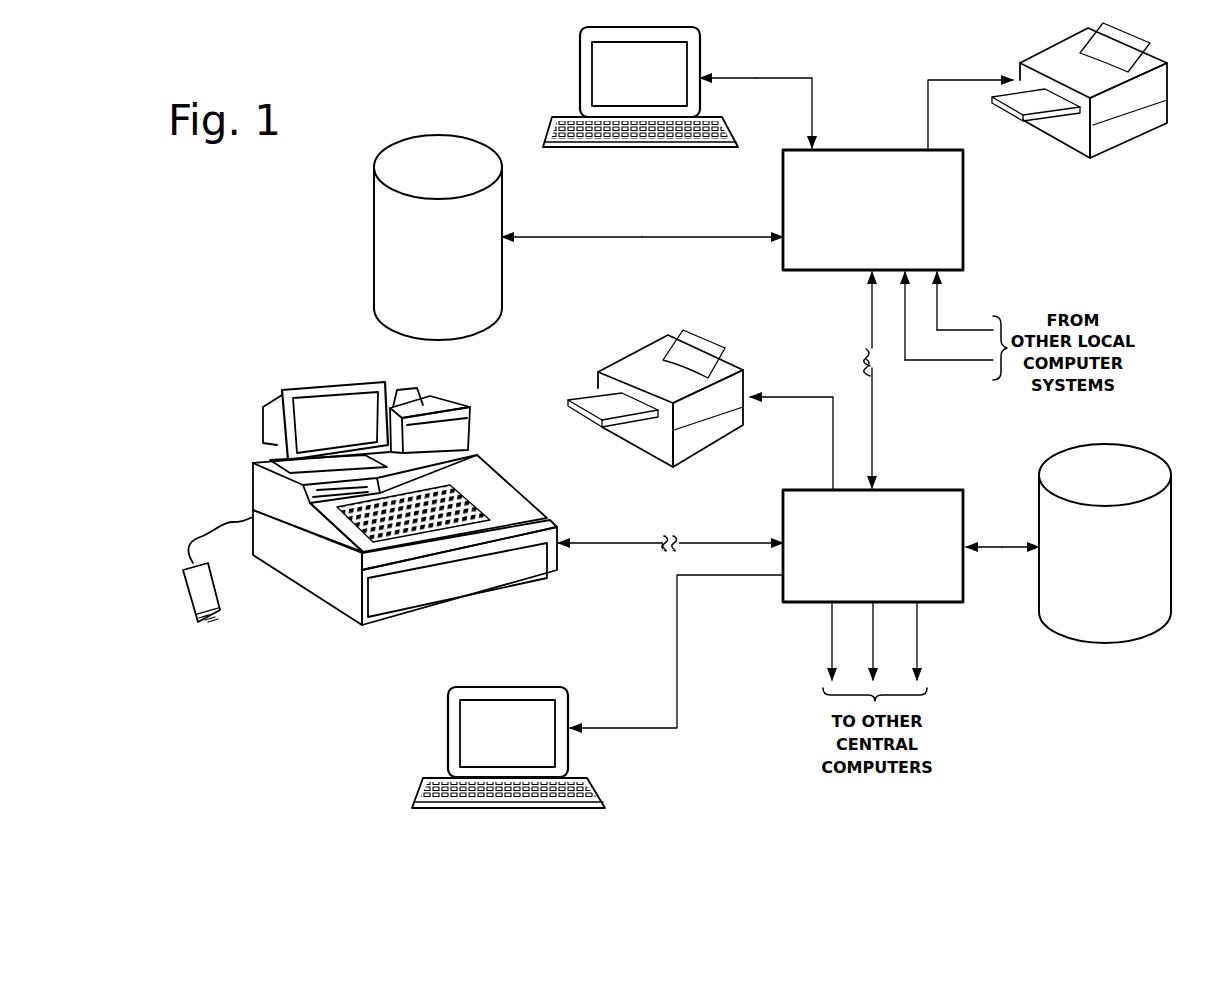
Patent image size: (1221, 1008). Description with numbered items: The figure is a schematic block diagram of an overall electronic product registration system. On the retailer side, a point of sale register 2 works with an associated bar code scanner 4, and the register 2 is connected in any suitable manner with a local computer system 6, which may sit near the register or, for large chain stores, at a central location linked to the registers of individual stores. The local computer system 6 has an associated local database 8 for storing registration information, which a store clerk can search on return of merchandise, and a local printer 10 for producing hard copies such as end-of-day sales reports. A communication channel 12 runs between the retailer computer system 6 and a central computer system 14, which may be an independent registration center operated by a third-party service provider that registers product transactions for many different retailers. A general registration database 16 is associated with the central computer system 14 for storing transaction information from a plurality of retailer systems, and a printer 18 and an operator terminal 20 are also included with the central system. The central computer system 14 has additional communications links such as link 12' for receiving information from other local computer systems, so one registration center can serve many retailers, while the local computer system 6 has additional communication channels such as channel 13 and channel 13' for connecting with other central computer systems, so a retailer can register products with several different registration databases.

The point of sale register 2 is at (513, 503).
The bar code scanner 4 is at (221, 601).
The local computer system 6 is at (1039, 512).
The local database 8 is at (948, 598).
The local printer 10 is at (618, 364).
The communication channel 12 is at (655, 615).
The additional communications link 12' is at (944, 383).
The additional communication channel 13 is at (796, 624).
The additional communication channel 13' is at (824, 653).
The central computer system 14 is at (968, 190).
The general registration database 16 is at (373, 284).
The printer 18 is at (1040, 60).
The operator terminal 20 is at (553, 82).